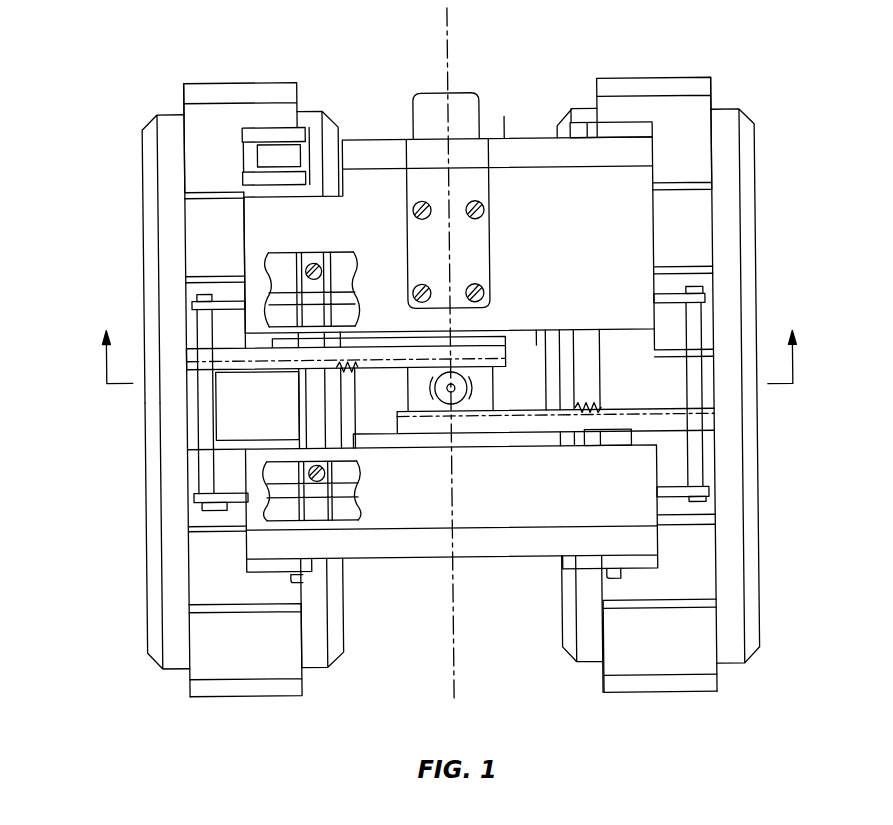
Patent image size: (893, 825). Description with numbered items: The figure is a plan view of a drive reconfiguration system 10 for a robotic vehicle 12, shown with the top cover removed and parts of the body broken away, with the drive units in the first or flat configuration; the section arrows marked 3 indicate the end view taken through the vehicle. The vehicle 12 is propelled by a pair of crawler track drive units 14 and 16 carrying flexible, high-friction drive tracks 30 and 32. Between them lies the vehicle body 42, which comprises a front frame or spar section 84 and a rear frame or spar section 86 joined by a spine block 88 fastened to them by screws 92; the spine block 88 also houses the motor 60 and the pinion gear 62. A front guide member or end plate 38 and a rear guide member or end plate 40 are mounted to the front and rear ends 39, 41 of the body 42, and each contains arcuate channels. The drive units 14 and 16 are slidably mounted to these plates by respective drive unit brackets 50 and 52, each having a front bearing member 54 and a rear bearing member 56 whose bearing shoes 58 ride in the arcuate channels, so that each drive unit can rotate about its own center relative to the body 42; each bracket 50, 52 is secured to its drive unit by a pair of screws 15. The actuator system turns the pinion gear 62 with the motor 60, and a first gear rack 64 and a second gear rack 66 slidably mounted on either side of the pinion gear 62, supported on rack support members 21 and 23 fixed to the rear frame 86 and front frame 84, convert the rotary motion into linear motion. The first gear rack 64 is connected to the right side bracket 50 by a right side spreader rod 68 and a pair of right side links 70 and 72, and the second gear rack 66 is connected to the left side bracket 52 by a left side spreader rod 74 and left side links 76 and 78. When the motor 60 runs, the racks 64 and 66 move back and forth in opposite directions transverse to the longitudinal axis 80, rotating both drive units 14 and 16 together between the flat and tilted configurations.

The drive reconfiguration system 10 is at (114, 51).
The robotic vehicle 12 is at (134, 189).
The drive unit 14 is at (144, 598).
The drive unit 16 is at (757, 597).
The drive track 30 is at (244, 81).
The drive track 32 is at (656, 80).
The rear guide member or end plate 40 is at (507, 117).
The rear end 41 is at (623, 159).
The vehicle body 42 is at (670, 222).
The drive unit bracket 50 is at (330, 402).
The drive unit bracket 52 is at (574, 386).
The front bearing member 54 is at (300, 582).
The rear bearing member 56 is at (245, 131).
The bearing shoe 58 is at (259, 164).
The motor 60 is at (466, 92).
The pinion gear 62 is at (421, 406).
The first gear rack 64 is at (244, 370).
The second gear rack 66 is at (655, 404).
The right side spreader rod 68 is at (186, 424).
The right side link 70 is at (212, 510).
The right side link 72 is at (284, 251).
The left side spreader rod 74 is at (704, 461).
The left side link 76 is at (667, 492).
The left side link 78 is at (661, 295).
The longitudinal axis 80 is at (454, 671).
The front frame or spar section 84 is at (477, 497).
The rear frame or spar section 86 is at (532, 238).
The spine block 88 is at (406, 398).
The screw 92 is at (421, 284).
The screw 15 is at (316, 262).
The rack support member 21 is at (539, 338).
The rack support member 23 is at (592, 421).
The front guide member or end plate 38 is at (427, 574).
The front end 39 is at (555, 528).
The section line 3- 3 is at (450, 376).